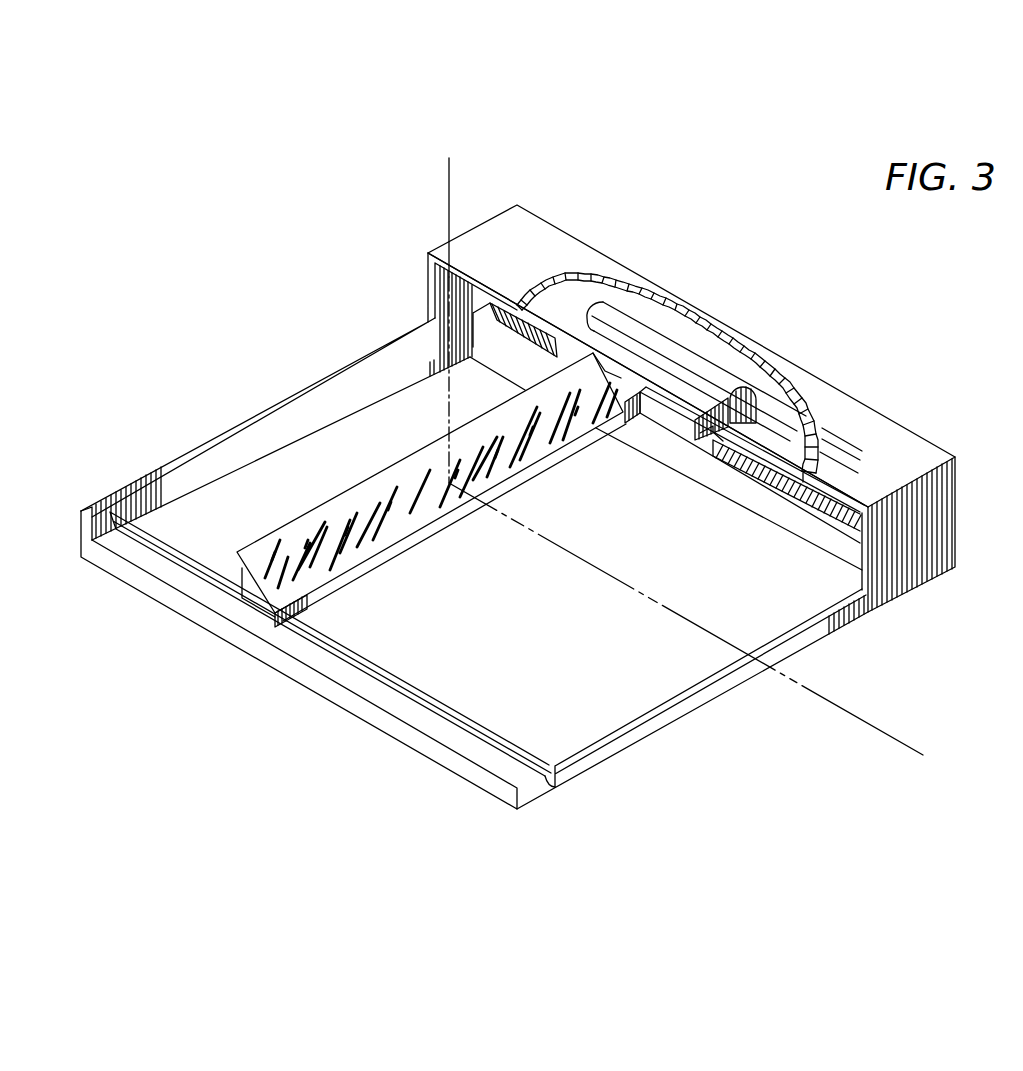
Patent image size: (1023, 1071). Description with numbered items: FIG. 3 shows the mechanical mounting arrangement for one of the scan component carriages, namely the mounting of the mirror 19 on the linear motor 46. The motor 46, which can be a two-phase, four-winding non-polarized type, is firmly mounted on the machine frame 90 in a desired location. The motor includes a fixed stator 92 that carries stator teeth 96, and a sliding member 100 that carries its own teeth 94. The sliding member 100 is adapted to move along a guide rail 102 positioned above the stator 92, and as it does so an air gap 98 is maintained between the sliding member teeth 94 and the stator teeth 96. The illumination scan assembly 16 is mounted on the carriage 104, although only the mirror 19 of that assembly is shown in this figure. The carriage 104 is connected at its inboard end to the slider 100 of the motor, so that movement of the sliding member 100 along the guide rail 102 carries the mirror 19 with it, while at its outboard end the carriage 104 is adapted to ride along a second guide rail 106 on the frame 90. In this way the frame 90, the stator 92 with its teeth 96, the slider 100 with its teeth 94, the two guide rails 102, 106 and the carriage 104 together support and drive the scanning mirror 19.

The illumination scan assembly 16 is at (225, 563).
The mirror 19 is at (412, 457).
The linear motor 46 is at (674, 442).
The machine frame 90 is at (665, 718).
The stator 92 is at (840, 540).
The sliding member teeth 94 is at (708, 436).
The stator teeth 96 is at (780, 480).
The air gap 98 is at (728, 453).
The sliding member 100 is at (763, 383).
The guide rail 102 is at (790, 432).
The carriage 104 is at (245, 605).
The guide rail 106 is at (393, 688).